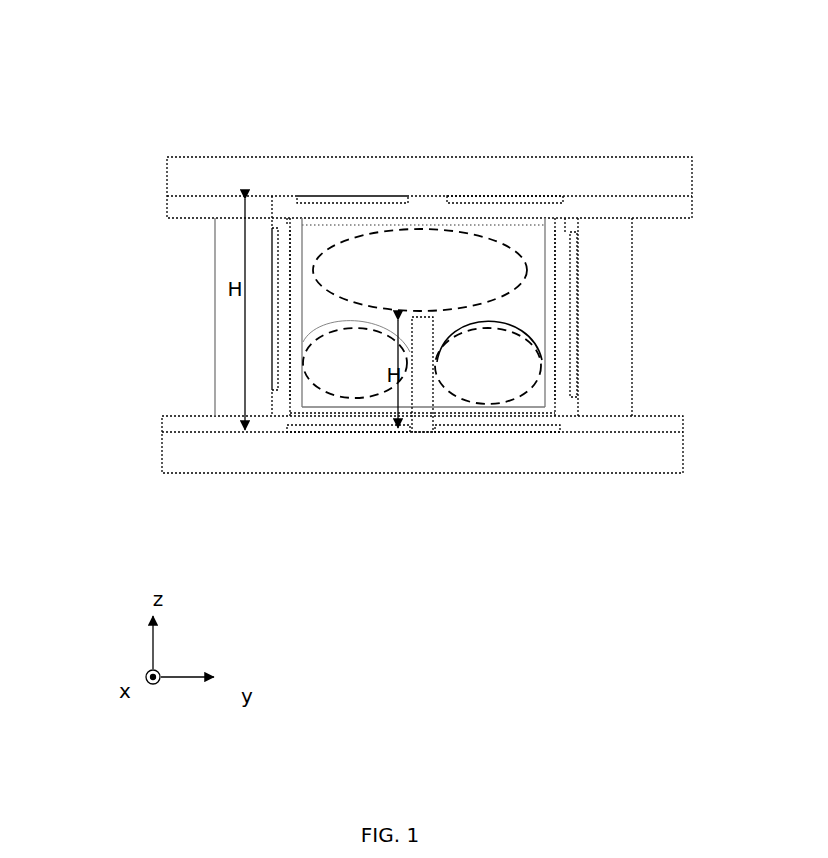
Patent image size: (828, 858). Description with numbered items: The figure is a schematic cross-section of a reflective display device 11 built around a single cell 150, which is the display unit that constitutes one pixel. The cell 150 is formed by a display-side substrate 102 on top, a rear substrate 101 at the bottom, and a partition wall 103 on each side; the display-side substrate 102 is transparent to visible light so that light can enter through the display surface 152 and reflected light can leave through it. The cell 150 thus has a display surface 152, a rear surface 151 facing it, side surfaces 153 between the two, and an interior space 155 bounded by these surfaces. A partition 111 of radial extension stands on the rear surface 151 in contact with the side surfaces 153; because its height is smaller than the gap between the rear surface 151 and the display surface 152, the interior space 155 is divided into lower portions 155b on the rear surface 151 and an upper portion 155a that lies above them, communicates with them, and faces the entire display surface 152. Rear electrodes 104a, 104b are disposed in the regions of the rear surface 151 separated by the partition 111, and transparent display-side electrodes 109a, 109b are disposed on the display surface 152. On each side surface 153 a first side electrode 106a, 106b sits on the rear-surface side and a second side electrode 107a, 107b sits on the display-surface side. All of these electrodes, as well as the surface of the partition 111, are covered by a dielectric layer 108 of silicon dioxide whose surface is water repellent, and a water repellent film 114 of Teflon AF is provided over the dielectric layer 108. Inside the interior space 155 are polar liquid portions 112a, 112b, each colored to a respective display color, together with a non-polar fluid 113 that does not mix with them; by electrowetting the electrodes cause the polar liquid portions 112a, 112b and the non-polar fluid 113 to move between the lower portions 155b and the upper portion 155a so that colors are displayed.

The reflective display device 11 is at (152, 117).
The rear substrate 101 is at (627, 457).
The display-side substrate 102 is at (417, 185).
The partition wall 103 is at (272, 305).
The rear electrode 104a is at (350, 432).
The rear electrode 104b is at (462, 433).
The first side electrode 106a is at (272, 355).
The first side electrode 106b is at (580, 373).
The second side electrode 107a is at (272, 262).
The second side electrode 107b is at (578, 265).
The dielectric layer 108 is at (287, 220).
The display-side electrode 109a is at (337, 196).
The display-side electrode 109b is at (515, 200).
The partition 111 is at (418, 380).
The polar liquid portion 112a is at (356, 359).
The polar liquid portion 112b is at (488, 362).
The non-polar fluid 113 is at (420, 270).
The water repellent film 114 is at (300, 383).
The cell 150 is at (288, 176).
The rear surface 151 is at (435, 425).
The display surface 152 is at (419, 205).
The side surfaces 153 is at (277, 306).
The interior space 155 is at (530, 62).
The portion 155a is at (448, 227).
The portions 155b is at (468, 330).